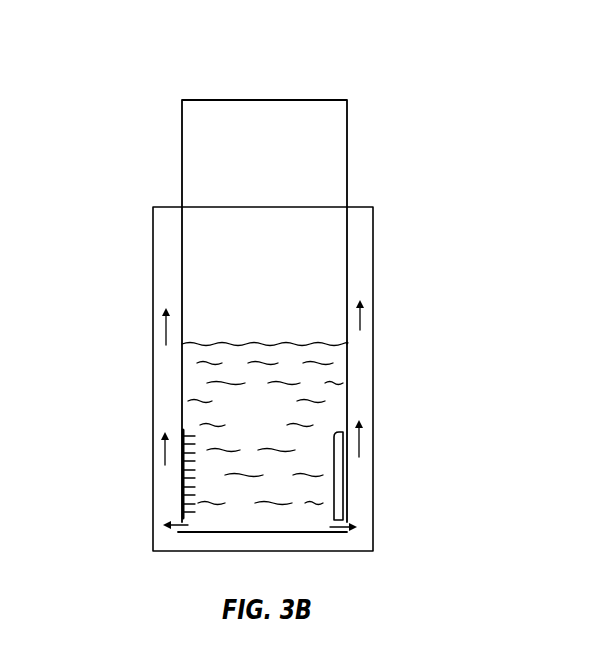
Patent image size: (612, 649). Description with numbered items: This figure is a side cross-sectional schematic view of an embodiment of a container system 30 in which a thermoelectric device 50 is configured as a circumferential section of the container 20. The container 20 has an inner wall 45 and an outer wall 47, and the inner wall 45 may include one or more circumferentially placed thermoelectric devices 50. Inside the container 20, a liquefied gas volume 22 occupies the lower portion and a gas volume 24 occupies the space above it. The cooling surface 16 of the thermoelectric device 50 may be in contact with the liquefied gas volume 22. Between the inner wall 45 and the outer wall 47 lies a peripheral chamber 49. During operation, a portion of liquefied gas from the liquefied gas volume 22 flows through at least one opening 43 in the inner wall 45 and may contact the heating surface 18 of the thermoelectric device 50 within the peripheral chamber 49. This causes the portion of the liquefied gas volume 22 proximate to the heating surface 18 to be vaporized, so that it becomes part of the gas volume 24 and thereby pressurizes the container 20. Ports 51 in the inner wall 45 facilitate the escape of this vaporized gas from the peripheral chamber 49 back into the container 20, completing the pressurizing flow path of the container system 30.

The container system 30 is at (412, 90).
The container 20 is at (290, 100).
The outer wall 47 is at (374, 228).
The ports 51 is at (182, 249).
The inner wall 45 is at (348, 279).
The gas volume 24 is at (275, 245).
The liquefied gas volume 22 is at (272, 425).
The heating surface 18 is at (183, 478).
The thermoelectric device 50 is at (350, 465).
The peripheral chamber 49 is at (358, 482).
The cooling surface 16 is at (184, 518).
The opening 43 is at (174, 533).